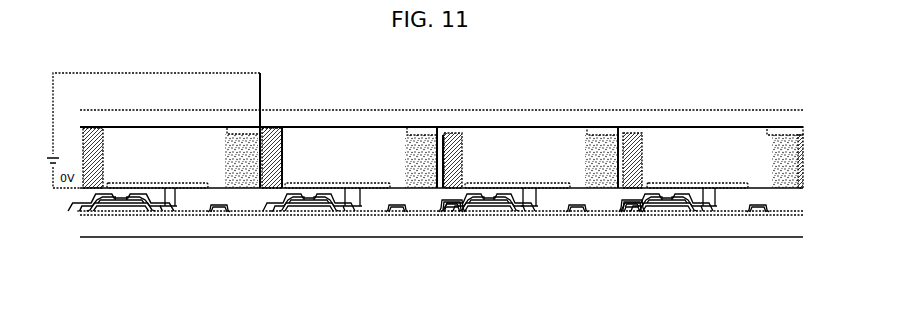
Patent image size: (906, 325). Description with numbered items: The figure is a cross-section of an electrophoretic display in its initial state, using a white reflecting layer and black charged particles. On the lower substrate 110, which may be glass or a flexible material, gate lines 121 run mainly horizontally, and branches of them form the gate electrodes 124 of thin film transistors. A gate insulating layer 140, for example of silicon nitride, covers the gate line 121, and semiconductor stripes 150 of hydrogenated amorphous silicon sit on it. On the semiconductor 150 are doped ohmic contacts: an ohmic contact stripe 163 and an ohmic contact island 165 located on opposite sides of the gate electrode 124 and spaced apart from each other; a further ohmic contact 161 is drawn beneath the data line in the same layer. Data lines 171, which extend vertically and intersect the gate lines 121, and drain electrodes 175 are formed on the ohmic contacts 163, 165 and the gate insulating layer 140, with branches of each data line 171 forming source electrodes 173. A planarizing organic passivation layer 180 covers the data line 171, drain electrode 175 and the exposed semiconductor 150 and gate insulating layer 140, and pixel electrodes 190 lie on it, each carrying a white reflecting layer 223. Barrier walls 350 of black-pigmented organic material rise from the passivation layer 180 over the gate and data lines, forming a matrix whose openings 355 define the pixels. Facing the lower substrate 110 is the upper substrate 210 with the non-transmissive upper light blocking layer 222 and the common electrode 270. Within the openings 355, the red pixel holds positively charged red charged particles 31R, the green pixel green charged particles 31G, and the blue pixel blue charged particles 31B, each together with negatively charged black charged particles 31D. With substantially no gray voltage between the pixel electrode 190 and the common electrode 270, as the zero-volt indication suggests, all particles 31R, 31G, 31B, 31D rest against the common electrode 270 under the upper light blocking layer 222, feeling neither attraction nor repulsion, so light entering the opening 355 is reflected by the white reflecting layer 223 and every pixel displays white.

The lower substrate 110 is at (181, 228).
The gate line 121 is at (219, 213).
The gate electrode 124 is at (303, 212).
The gate insulating layer 140 is at (149, 212).
The semiconductor stripe 150 is at (311, 213).
The ohmic contact 161 is at (446, 213).
The ohmic contact stripe 163 is at (299, 213).
The ohmic contact island 165 is at (324, 213).
The data line 171 is at (462, 213).
The source electrode 173 is at (290, 212).
The drain electrode 175 is at (356, 212).
The passivation layer 180 is at (415, 200).
The pixel electrode 190 is at (133, 185).
The upper substrate 210 is at (503, 120).
The upper light blocking layer 222 is at (232, 127).
The white reflecting layer 223 is at (173, 186).
The common electrode 270 is at (283, 150).
The barrier wall 350 is at (278, 132).
The opening 355 is at (102, 140).
The red charged particle 31R is at (776, 136).
The green charged particle 31G is at (411, 131).
The blue charged particle 31B is at (595, 136).
The black charged particle 31D is at (430, 133).